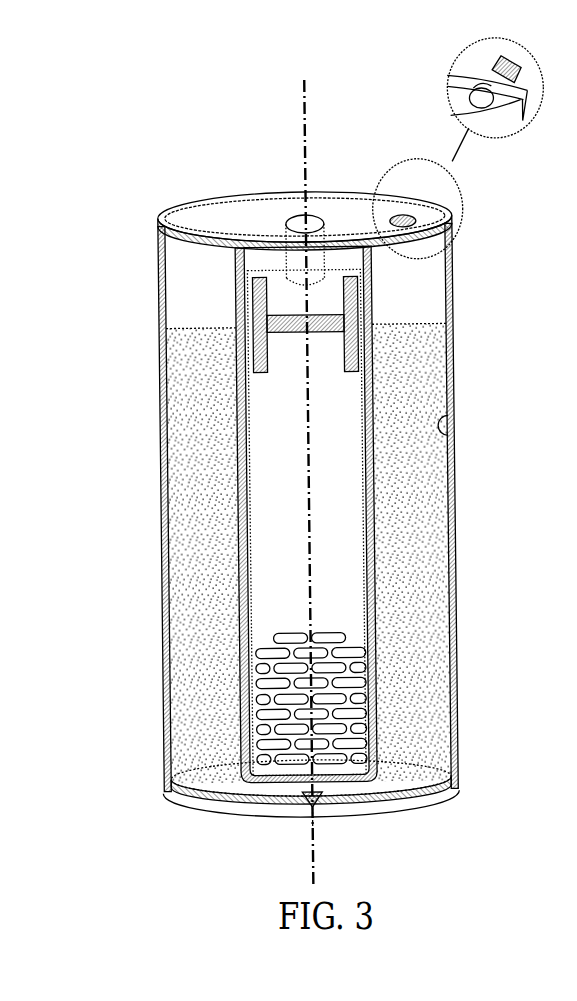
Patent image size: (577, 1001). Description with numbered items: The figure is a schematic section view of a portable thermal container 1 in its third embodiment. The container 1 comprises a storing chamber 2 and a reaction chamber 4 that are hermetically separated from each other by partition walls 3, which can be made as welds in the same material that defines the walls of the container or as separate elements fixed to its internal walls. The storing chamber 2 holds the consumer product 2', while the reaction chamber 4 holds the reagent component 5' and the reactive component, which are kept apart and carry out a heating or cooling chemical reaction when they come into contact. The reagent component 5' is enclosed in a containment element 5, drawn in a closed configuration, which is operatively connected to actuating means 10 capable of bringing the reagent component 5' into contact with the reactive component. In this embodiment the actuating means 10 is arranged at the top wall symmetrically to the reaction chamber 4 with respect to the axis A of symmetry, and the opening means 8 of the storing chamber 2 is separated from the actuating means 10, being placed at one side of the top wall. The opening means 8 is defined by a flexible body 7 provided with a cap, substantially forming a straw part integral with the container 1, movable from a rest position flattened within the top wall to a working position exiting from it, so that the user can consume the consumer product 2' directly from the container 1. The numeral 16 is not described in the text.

The portable thermal container 1 is at (282, 528).
The storing chamber 2 is at (188, 313).
The consumer product 2' is at (439, 335).
The partition walls 3 is at (379, 524).
The reaction chamber 4 is at (280, 496).
The containment element 5 is at (238, 277).
The reagent component 5' is at (332, 351).
The bottom outlet 16 is at (317, 833).
The actuating means 10 is at (309, 190).
The flexible body 7 is at (491, 73).
The opening means 8 is at (526, 58).
The axis of symmetry A is at (317, 474).